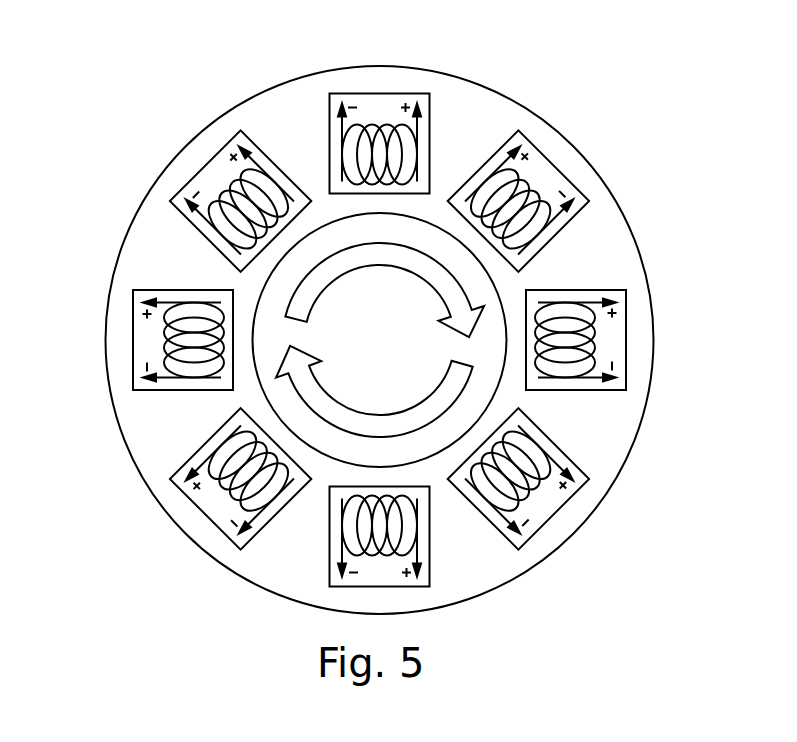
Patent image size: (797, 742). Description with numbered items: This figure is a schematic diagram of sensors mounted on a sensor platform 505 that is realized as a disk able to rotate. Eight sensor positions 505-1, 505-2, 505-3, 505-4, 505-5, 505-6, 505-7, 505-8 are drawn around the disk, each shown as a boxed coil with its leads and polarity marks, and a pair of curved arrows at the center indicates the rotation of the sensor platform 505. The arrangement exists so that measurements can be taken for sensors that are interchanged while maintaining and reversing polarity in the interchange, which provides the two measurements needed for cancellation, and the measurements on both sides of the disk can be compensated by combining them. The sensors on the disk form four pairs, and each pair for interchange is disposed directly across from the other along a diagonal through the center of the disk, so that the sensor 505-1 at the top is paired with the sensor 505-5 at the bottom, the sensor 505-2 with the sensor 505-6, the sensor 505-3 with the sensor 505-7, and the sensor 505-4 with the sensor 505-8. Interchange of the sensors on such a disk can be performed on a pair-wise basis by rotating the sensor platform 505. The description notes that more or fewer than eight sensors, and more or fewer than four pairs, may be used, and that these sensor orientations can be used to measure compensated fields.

The sensor platform 505 is at (482, 102).
The electromagnet coil 1 505-1 is at (367, 93).
The electromagnet coil 2 505-2 is at (200, 172).
The electromagnet coil 3 505-3 is at (133, 323).
The electromagnet coil 4 505-4 is at (197, 510).
The electromagnet coil 5 505-5 is at (329, 551).
The electromagnet coil 6 505-6 is at (560, 515).
The electromagnet coil 7 505-7 is at (627, 332).
The electromagnet coil 8 505-8 is at (547, 159).